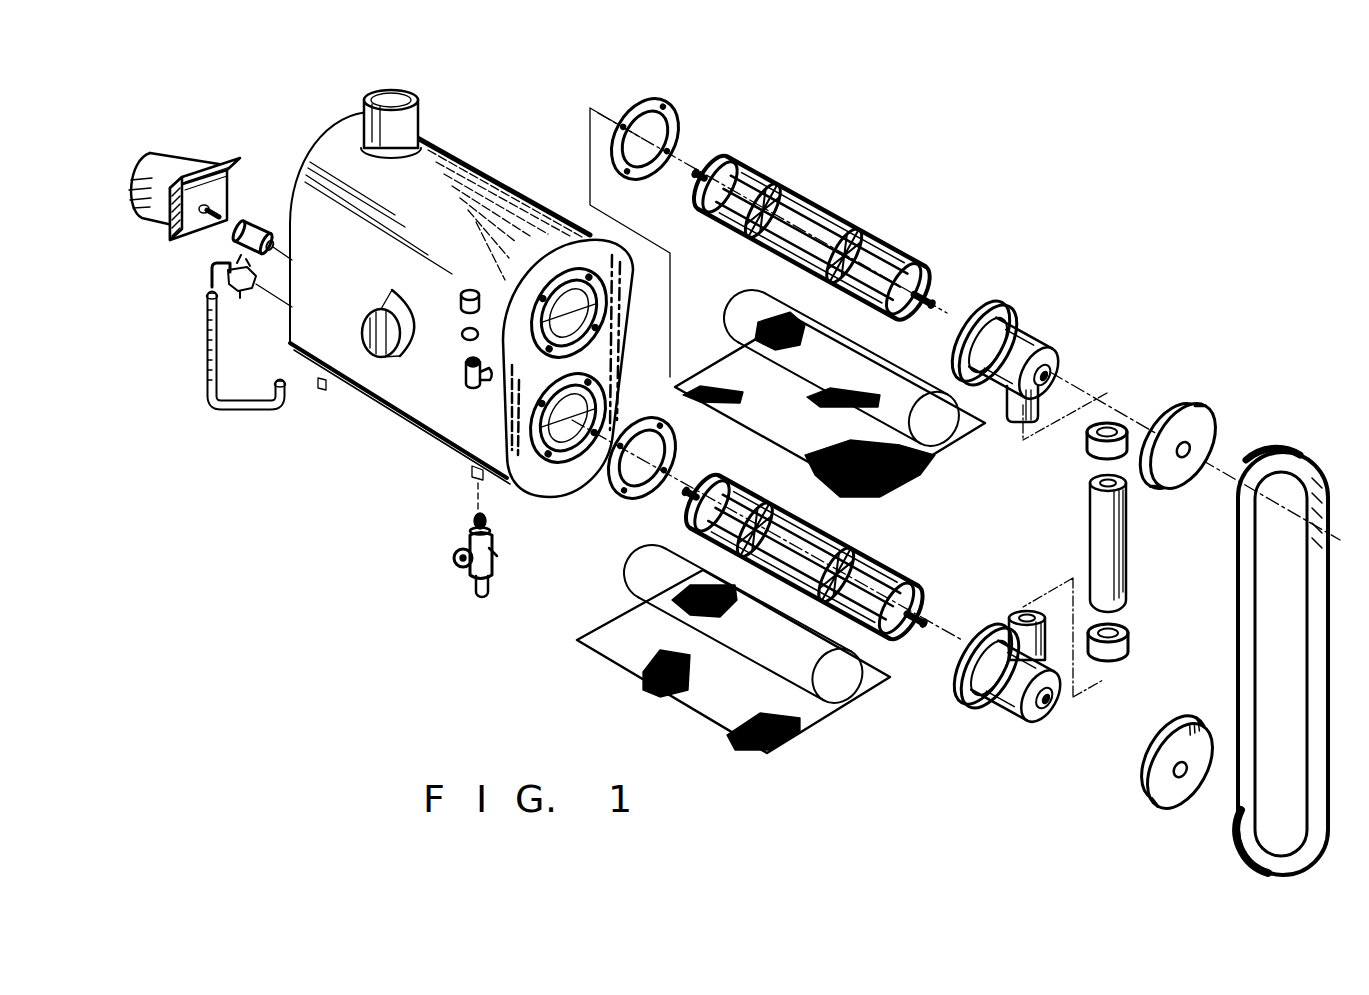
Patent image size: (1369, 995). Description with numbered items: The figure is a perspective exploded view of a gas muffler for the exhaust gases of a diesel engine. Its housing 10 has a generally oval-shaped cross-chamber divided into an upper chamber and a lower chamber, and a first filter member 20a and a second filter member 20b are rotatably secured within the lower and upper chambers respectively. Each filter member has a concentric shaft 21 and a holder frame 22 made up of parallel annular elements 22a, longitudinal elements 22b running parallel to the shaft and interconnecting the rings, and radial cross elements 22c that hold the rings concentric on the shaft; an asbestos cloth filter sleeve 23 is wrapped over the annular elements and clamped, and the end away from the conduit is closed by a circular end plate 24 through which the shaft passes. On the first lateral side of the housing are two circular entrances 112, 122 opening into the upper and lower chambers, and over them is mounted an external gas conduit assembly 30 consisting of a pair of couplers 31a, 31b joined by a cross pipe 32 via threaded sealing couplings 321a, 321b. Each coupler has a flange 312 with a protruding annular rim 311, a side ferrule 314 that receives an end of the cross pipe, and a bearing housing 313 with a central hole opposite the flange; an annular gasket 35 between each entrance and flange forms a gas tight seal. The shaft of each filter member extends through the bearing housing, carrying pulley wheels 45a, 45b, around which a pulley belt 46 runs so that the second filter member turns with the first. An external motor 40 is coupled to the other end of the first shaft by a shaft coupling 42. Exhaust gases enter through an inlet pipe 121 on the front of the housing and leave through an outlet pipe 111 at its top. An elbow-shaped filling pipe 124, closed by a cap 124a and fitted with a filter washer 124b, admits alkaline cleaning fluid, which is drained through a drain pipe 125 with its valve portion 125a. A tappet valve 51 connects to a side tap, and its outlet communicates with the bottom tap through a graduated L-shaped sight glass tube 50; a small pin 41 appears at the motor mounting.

The housing 10 is at (340, 140).
The outlet pipe 111 is at (400, 88).
The circular entrance 112 is at (569, 266).
The inlet pipe 121 is at (383, 350).
The circular entrance 122 is at (563, 455).
The filling pipe 124 is at (474, 388).
The cap 124a is at (467, 290).
The filter washer 124b is at (465, 338).
The drain pipe 125 is at (467, 587).
The valve outlet 125a is at (495, 560).
The first filter member 20a is at (900, 657).
The second filter member 20b is at (818, 188).
The shaft 21 is at (930, 270).
The holder frame 22 is at (853, 210).
The annular elements 22a is at (910, 573).
The longitudinal elements 22b is at (852, 547).
The cross elements 22c is at (777, 507).
The filter sleeve 23 is at (803, 720).
The circular end plate 24 is at (723, 157).
The gas conduit assembly 30 is at (1025, 724).
The annular rim 311 is at (983, 627).
The flange 312 is at (1007, 305).
The bearing housing 313 is at (1050, 358).
The ferrule 314 is at (1020, 427).
The coupler 31a is at (997, 707).
The coupler 31b is at (1030, 320).
The cross pipe 32 is at (1127, 537).
The threaded sealing coupling 321a is at (1127, 650).
The threaded sealing coupling 321b is at (1112, 417).
The annular gasket 35 is at (657, 97).
The motor 40 is at (172, 160).
The pin 41 is at (205, 216).
The shaft coupling 42 is at (243, 222).
The pulley wheel 45a is at (1187, 790).
The pulley wheel 45b is at (1197, 420).
The pulley belt 46 is at (1287, 453).
The sight glass tube 50 is at (230, 413).
The tappet valve 51 is at (235, 290).